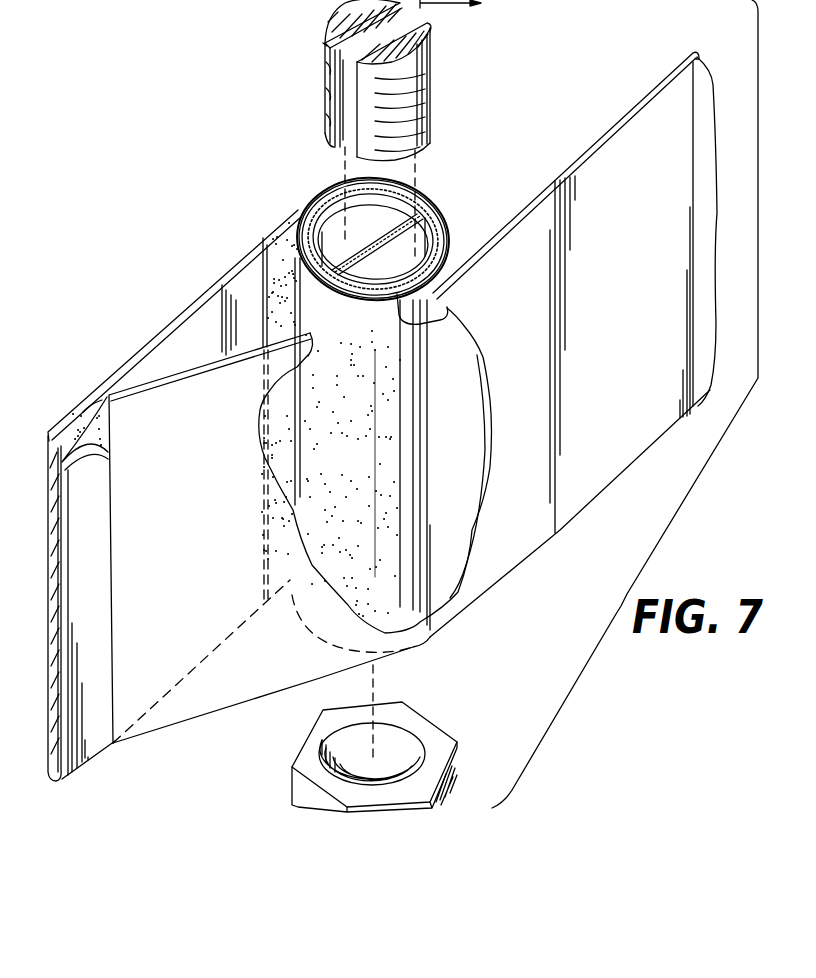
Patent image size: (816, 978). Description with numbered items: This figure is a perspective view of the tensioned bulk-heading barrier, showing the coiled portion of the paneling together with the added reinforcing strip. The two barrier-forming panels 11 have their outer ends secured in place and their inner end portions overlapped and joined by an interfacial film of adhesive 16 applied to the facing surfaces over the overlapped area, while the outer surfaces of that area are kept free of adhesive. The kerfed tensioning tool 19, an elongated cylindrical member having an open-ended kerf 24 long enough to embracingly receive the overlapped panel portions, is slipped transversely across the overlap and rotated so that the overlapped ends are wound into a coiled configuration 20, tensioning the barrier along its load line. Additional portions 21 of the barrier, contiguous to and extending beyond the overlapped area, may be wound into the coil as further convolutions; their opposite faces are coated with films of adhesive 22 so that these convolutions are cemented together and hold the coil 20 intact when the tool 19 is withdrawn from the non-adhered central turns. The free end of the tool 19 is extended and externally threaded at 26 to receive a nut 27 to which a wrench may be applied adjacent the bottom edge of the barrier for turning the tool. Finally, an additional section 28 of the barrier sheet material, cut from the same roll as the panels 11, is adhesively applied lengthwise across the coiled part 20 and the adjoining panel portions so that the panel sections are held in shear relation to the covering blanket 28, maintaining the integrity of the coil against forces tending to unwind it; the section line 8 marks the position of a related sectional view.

The section line 8- 8 is at (457, 9).
The barrier-forming panel 11 is at (188, 303).
The interfacial film of adhesive 16 is at (379, 238).
The kerfed tensioning tool 19 is at (340, 22).
The coiled configuration 20 is at (432, 197).
The additional portion of the barrier 21 is at (329, 176).
The film of adhesive 22 is at (285, 243).
The open-ended kerf 24 is at (347, 83).
The externally threaded end 26 is at (417, 100).
The nut 27 is at (408, 717).
The additional section of barrier sheet material 28 is at (525, 520).